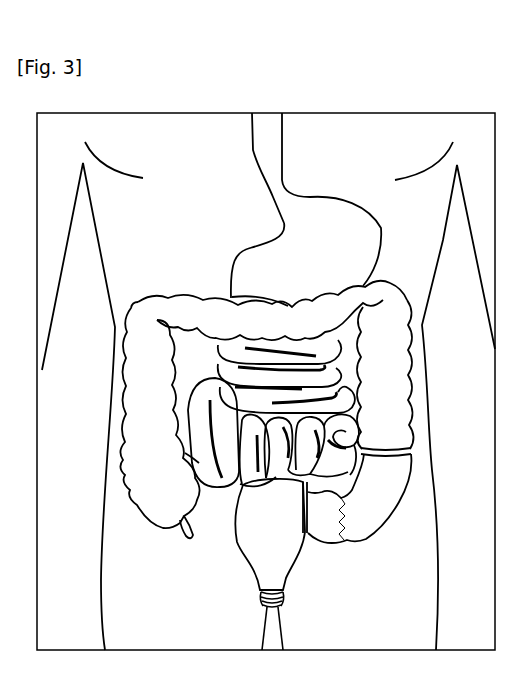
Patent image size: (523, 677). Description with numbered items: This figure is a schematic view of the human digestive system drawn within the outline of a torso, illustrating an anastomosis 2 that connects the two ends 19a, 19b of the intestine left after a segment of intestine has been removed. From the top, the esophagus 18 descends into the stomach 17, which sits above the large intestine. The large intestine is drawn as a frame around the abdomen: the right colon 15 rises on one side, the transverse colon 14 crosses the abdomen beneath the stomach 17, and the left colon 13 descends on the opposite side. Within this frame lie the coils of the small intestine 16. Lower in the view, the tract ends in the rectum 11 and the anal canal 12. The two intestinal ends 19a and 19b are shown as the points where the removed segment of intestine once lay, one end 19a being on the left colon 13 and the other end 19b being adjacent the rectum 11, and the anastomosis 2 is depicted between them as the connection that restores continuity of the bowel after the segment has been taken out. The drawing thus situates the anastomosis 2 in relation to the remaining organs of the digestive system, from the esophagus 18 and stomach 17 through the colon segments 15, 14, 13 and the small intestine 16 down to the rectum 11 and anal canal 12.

The esophagus 18 is at (270, 149).
The stomach 17 is at (265, 265).
The transverse colon 14 is at (213, 316).
The small intestine 16 is at (202, 408).
The right colon 15 is at (151, 483).
The left colon 13 is at (390, 440).
The end of removed segment of intestine 19a is at (394, 455).
The end of removed segment of intestine 19b is at (308, 520).
The anal canal 12 is at (268, 553).
The rectum 11 is at (285, 601).
The anastomosis 2 is at (344, 518).